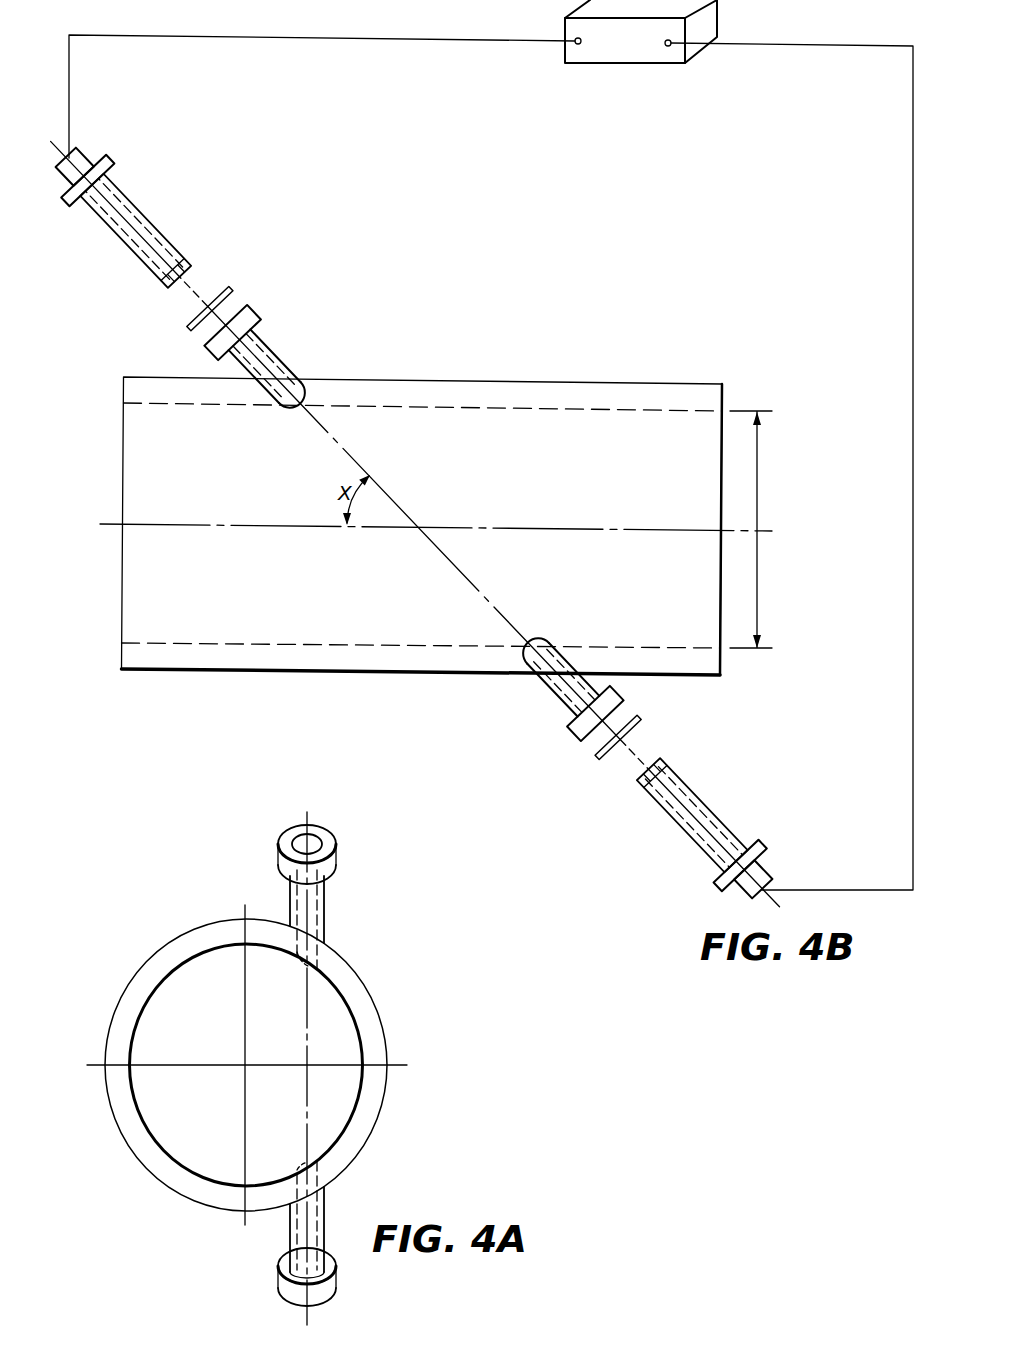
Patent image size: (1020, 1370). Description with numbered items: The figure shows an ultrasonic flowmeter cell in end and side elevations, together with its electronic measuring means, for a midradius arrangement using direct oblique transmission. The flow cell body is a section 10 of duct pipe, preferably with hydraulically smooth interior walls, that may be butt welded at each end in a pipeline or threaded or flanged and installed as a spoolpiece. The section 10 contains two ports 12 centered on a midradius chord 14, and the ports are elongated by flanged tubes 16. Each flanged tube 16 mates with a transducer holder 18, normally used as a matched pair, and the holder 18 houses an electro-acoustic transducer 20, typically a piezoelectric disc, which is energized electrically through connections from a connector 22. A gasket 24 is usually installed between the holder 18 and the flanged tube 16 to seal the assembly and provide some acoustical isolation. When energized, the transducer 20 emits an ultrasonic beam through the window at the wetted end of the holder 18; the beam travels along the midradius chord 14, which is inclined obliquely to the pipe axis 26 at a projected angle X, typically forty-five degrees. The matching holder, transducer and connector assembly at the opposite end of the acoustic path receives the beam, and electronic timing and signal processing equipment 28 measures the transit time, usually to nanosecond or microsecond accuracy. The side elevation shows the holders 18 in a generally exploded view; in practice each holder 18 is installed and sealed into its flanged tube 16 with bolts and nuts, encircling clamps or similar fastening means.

In FIG. 4B, the section of duct pipe 10 is at (123, 622).
In FIG. 4A, the section of duct pipe 10 is at (358, 975).
In FIG. 4B, the ports 12 is at (308, 386).
In FIG. 4A, the ports 12 is at (300, 958).
In FIG. 4B, the midradius chord 14 is at (521, 632).
In FIG. 4A, the midradius chord 14 is at (307, 1113).
In FIG. 4B, the flanged tubes 16 is at (270, 352).
In FIG. 4A, the flanged tubes 16 is at (290, 892).
In FIG. 4B, the transducer holder 18 is at (117, 230).
In FIG. 4B, the electro-acoustic transducer 20 is at (173, 277).
In FIG. 4B, the connector 22 is at (58, 175).
In FIG. 4B, the gasket 24 is at (196, 330).
In FIG. 4B, the pipe axis 26 is at (175, 524).
In FIG. 4A, the pipe axis 26 is at (246, 1064).
In FIG. 4B, the electronic timing and signal processing equipment 28 is at (641, 63).